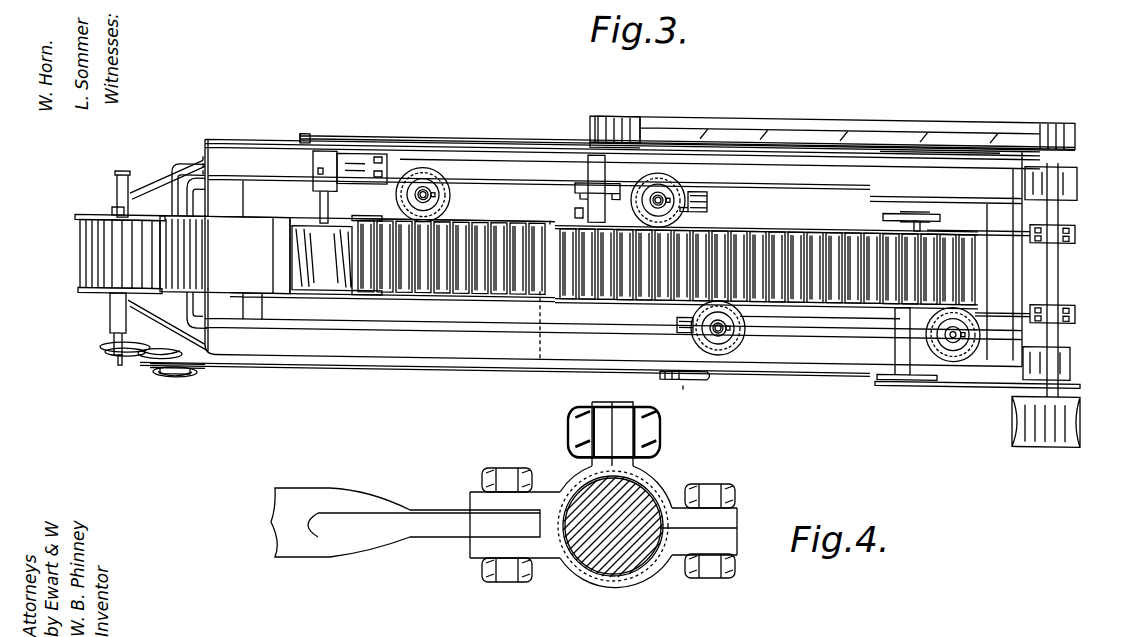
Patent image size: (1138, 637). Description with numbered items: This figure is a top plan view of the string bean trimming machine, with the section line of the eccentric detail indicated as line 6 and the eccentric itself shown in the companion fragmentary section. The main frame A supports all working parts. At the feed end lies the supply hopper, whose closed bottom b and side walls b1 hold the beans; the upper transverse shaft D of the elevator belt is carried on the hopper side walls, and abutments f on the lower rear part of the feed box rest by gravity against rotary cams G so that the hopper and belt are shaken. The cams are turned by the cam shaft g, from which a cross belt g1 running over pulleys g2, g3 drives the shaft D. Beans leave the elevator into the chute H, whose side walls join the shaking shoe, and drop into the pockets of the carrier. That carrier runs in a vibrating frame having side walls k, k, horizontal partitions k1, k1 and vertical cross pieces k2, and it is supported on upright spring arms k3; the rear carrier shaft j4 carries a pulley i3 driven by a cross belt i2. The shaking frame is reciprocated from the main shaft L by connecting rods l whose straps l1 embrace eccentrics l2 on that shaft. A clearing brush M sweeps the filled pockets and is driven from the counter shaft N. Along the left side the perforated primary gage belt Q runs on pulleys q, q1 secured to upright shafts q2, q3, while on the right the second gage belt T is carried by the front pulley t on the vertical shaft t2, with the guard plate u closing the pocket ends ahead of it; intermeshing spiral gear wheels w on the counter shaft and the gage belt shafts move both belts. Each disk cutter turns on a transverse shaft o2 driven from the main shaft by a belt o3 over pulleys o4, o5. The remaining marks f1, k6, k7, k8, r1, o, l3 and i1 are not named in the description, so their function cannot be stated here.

In FIG. 3, the main frame A is at (220, 154).
In FIG. 3, the upper transverse shaft D is at (119, 181).
In FIG. 3, the abutments or tappets f is at (145, 188).
In FIG. 3, the bracket arm f1 is at (180, 166).
In FIG. 3, the rotary cams G is at (195, 199).
In FIG. 3, the chute H is at (120, 245).
In FIG. 3, the closed bottom b is at (120, 253).
In FIG. 3, the side walls b1 is at (100, 212).
In FIG. 3, the side walls of shaking frame k is at (876, 123).
In FIG. 3, the horizontal transverse partitions k1 is at (745, 118).
In FIG. 3, the vertical cross pieces k2 is at (325, 144).
In FIG. 3, the upright spring arms k3 is at (710, 149).
In FIG. 3, the lower rod k6 is at (505, 381).
In FIG. 3, the collar k7 is at (704, 376).
In FIG. 3, the pulley k8 is at (182, 376).
In FIG. 3, the counter shaft N is at (684, 395).
In FIG. 3, the main shaft L is at (1072, 261).
In FIG. 4, the main shaft L is at (648, 572).
In FIG. 3, the clearing brush M is at (329, 278).
In FIG. 3, the bar r1 is at (383, 202).
In FIG. 3, the primary gage belt Q is at (478, 205).
In FIG. 3, the guard plate or board u is at (598, 303).
In FIG. 3, the centerline 6 is at (549, 278).
In FIG. 3, the front pulley of primary gage belt q is at (430, 192).
In FIG. 3, the upright shaft q2 is at (420, 192).
In FIG. 3, the rear pulley of primary gage belt q1 is at (650, 193).
In FIG. 3, the rear upright shaft q3 is at (660, 196).
In FIG. 3, the front pulley of second gage belt t is at (733, 330).
In FIG. 3, the front vertical shaft t2 is at (716, 326).
In FIG. 3, the second gage belt T is at (825, 327).
In FIG. 3, the spiral gear wheels w is at (710, 198).
In FIG. 3, the post o is at (894, 319).
In FIG. 3, the cutter shaft o2 is at (616, 128).
In FIG. 3, the cutter belt o3 is at (815, 144).
In FIG. 3, the cutter drive pulley o4 is at (588, 143).
In FIG. 3, the cutter drive pulley o5 is at (1070, 143).
In FIG. 3, the connecting rods l is at (1016, 241).
In FIG. 4, the connecting rods l is at (310, 502).
In FIG. 3, the straps l1 is at (1073, 225).
In FIG. 4, the straps l1 is at (575, 578).
In FIG. 3, the eccentrics l2 is at (887, 207).
In FIG. 4, the eccentrics l2 is at (628, 575).
In FIG. 3, the wheel l3 is at (925, 180).
In FIG. 3, the cross belt i2 is at (901, 215).
In FIG. 3, the rear carrier shaft j4 is at (910, 203).
In FIG. 3, the carrier pulley i3 is at (940, 207).
In FIG. 3, the bar i1 is at (355, 290).
In FIG. 3, the cam shaft g is at (173, 376).
In FIG. 3, the cross belt g1 is at (135, 320).
In FIG. 3, the cam shaft pulley g2 is at (160, 363).
In FIG. 3, the feed shaft pulley g3 is at (115, 357).